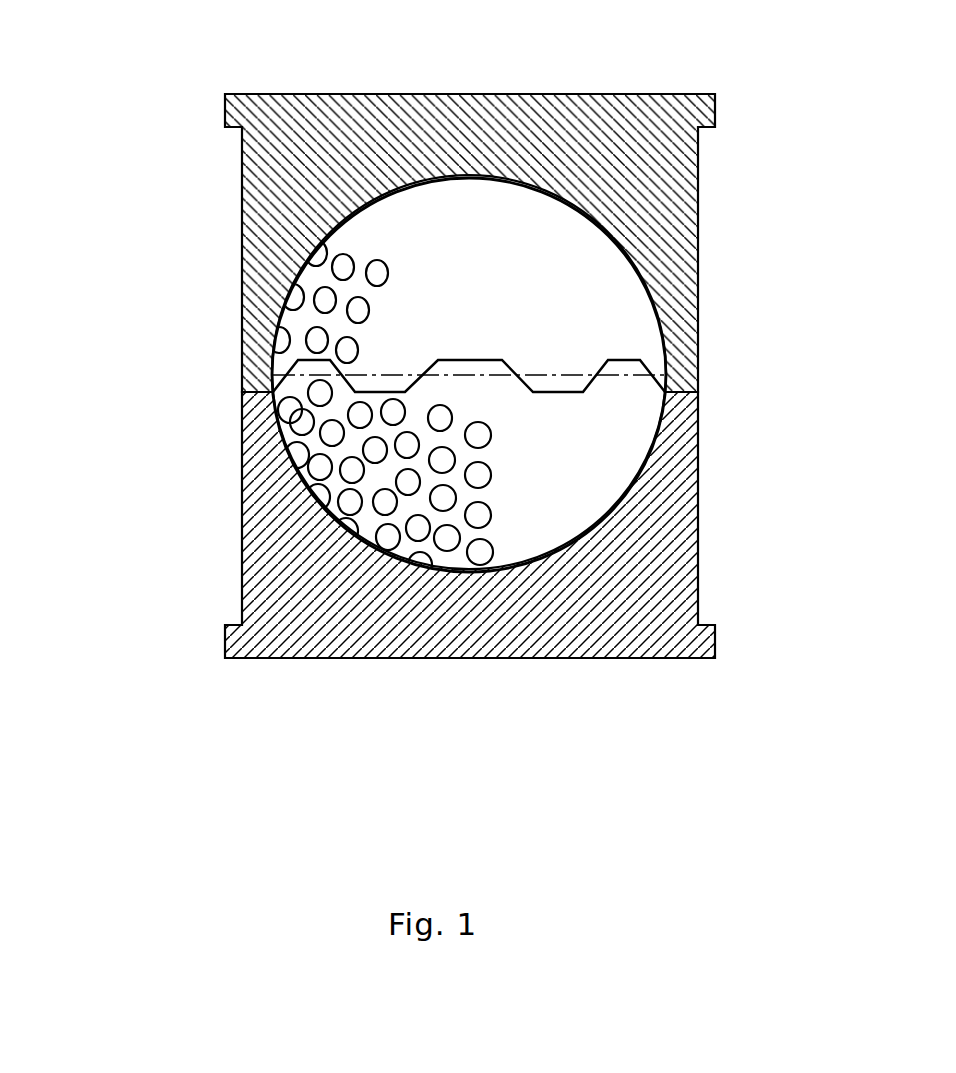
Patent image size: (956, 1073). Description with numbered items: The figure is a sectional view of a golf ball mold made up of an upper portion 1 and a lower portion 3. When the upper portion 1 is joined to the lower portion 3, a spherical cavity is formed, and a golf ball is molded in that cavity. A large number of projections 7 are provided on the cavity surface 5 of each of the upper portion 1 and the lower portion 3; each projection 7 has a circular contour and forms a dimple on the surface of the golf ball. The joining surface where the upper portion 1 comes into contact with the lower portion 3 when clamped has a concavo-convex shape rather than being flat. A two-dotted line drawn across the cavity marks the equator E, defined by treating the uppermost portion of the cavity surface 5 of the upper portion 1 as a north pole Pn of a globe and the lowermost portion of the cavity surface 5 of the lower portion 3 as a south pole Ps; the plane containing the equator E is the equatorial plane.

The upper portion 1 is at (198, 193).
The lower portion 3 is at (178, 556).
The cavity surface 5 is at (598, 232).
The projection 7 is at (278, 288).
The equator E is at (615, 375).
The north pole Pn is at (469, 177).
The south pole Ps is at (470, 577).